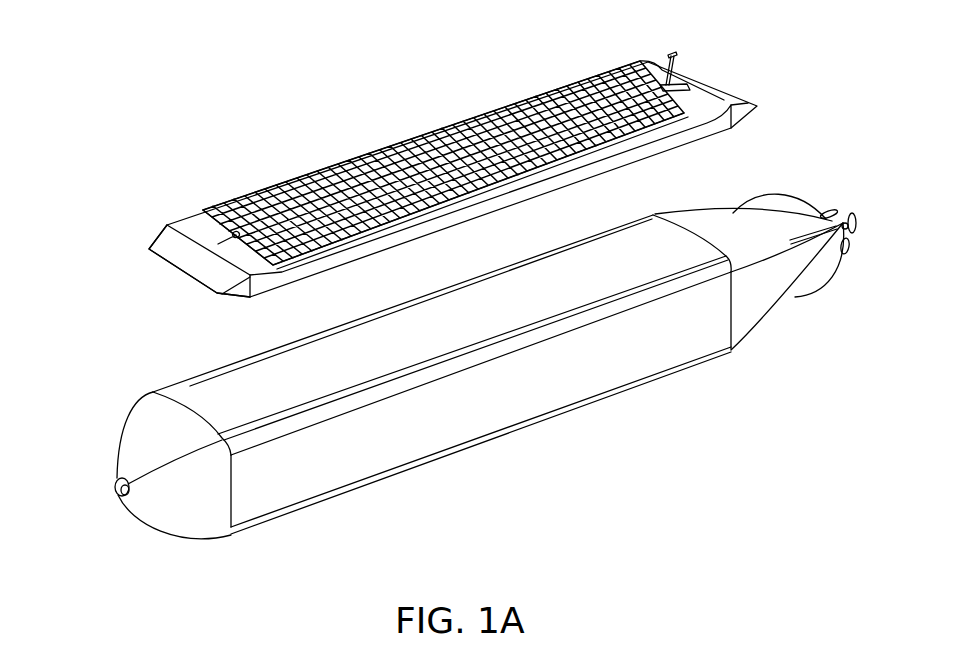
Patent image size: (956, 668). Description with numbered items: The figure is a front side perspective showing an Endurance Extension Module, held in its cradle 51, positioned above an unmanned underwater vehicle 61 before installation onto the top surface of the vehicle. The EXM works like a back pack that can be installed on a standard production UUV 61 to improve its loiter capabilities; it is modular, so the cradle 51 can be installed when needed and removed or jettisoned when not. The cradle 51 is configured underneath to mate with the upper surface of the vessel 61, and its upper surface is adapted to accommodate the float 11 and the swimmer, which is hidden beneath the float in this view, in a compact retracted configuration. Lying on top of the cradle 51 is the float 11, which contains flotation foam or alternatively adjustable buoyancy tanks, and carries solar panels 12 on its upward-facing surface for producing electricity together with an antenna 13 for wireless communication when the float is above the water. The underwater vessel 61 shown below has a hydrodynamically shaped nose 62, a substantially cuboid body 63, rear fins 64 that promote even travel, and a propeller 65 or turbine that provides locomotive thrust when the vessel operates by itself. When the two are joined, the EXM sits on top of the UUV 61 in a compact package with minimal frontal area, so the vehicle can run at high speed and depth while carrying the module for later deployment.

The float 11 is at (205, 211).
The solar panels 12 is at (433, 140).
The antenna 13 is at (676, 53).
The cradle 51 is at (157, 252).
The unmanned underwater vehicle 61 is at (88, 362).
The nose 62 is at (193, 512).
The body 63 is at (427, 430).
The rear fins 64 is at (825, 295).
The propeller 65 is at (849, 218).